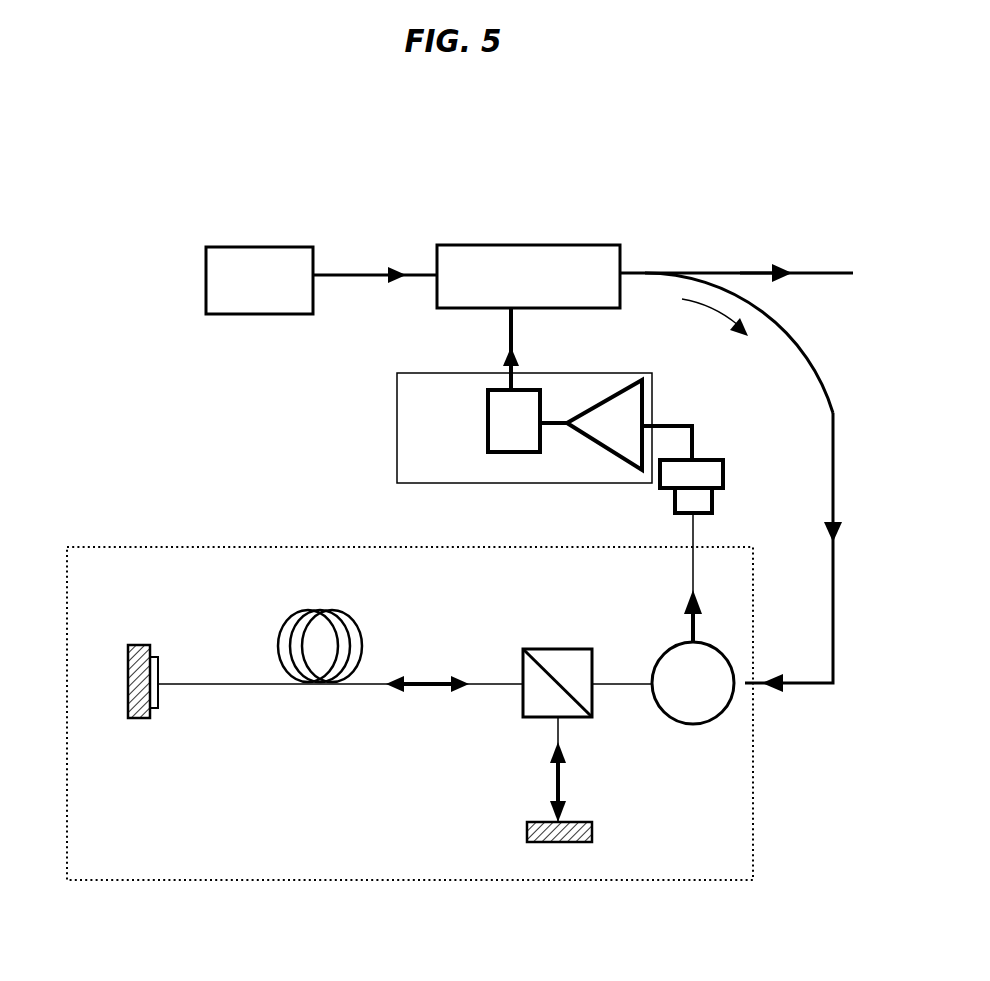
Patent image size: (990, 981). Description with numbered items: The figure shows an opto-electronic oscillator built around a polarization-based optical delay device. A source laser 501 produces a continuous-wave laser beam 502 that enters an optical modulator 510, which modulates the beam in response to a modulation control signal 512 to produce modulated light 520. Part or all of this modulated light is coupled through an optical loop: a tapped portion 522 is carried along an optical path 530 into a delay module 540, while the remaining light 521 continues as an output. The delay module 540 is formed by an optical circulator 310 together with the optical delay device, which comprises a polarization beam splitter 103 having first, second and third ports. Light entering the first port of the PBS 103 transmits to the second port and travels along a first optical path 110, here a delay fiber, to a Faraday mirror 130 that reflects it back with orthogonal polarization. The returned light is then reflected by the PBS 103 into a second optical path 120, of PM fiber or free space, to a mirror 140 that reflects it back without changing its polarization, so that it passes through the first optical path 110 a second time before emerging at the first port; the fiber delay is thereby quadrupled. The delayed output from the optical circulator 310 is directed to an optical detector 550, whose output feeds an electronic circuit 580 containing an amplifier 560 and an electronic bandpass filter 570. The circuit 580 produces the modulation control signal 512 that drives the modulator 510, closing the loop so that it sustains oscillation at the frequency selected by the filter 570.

The source laser 501 is at (207, 256).
The CW laser beam 502 is at (351, 270).
The optical modulator 510 is at (530, 244).
The modulation control signal 512 is at (506, 320).
The modulated light output 520 is at (646, 272).
The output light 521 is at (811, 272).
The tapped light 522 is at (710, 305).
The feedback optical path 530 is at (833, 413).
The delay module 540 is at (747, 816).
The optical detector 550 is at (737, 499).
The amplifier 560 is at (636, 396).
The electronic bandpass filter 570 is at (489, 426).
The electronic circuit 580 is at (413, 483).
The optical circulator 310 is at (671, 657).
The optical polarization beam splitter 103 is at (558, 650).
The first optical path 110 is at (257, 717).
The second optical path 120 is at (545, 753).
The Faraday reflector 130 is at (126, 642).
The reflector 140 is at (512, 836).